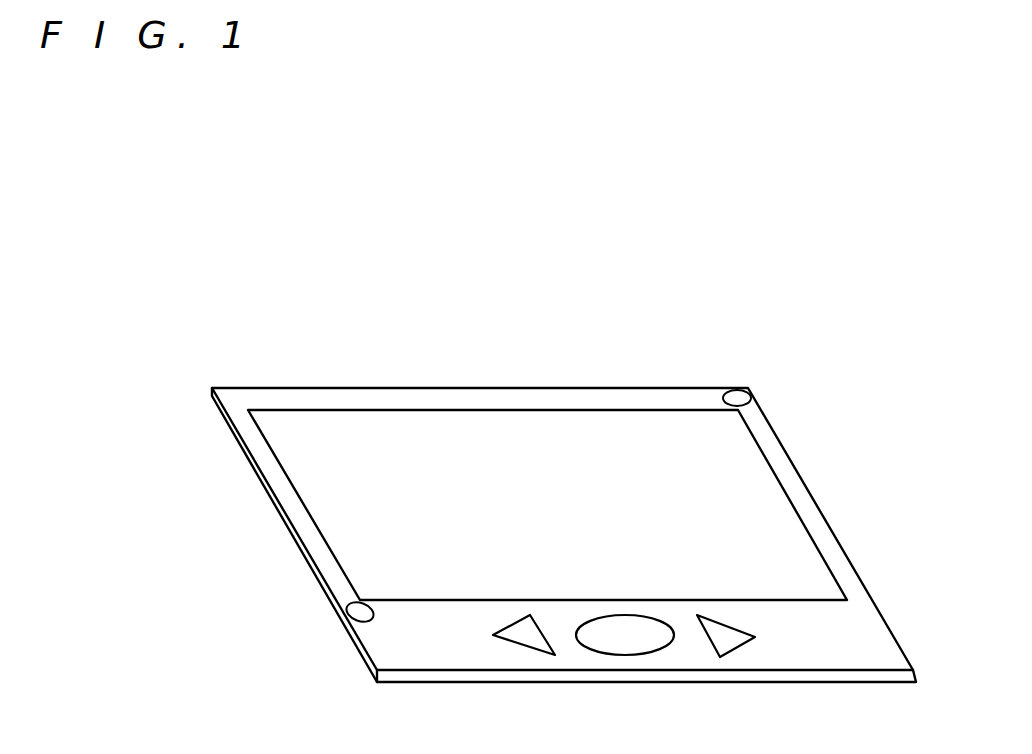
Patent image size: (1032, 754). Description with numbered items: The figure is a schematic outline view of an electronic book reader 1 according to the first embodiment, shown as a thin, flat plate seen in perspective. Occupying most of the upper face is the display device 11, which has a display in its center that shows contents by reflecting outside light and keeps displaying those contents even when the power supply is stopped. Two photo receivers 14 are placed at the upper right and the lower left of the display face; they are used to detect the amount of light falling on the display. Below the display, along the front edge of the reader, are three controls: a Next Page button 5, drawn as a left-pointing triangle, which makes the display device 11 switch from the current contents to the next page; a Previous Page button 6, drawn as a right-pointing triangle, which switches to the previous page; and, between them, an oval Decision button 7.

The electronic book reader 1 is at (712, 306).
The display device 11 is at (335, 514).
The photo receivers 14 is at (740, 396).
The Next Page button 5 is at (520, 637).
The Previous Page button 6 is at (733, 637).
The Decision button 7 is at (626, 636).